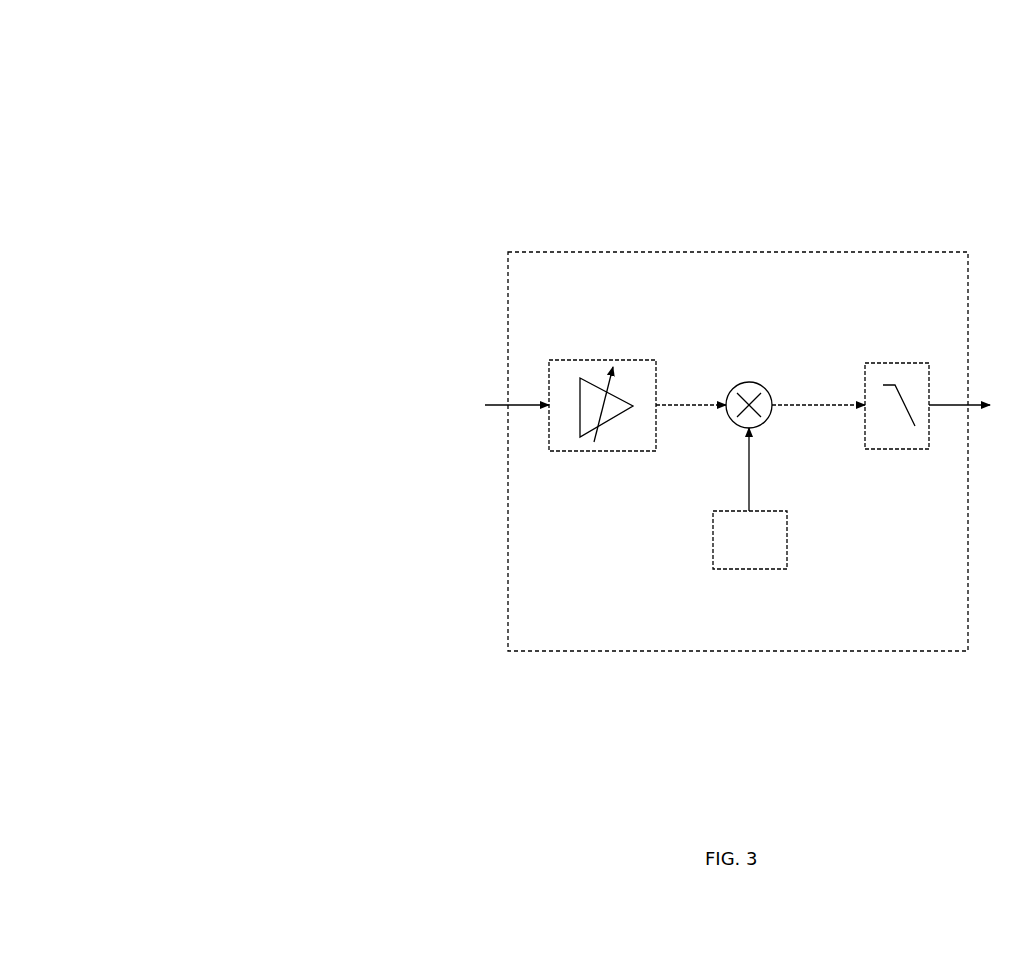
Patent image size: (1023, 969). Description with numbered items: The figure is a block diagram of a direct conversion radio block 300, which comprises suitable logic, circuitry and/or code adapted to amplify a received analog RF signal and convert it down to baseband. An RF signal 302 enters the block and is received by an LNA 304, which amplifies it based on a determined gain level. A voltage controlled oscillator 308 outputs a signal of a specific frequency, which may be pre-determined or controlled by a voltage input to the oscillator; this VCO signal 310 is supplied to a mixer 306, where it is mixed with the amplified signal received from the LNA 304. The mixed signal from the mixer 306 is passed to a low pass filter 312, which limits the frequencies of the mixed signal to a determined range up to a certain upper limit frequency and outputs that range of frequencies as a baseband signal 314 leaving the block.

The direct conversion radio block 300 is at (234, 116).
The RF signal 302 is at (500, 402).
The LNA 304 is at (633, 360).
The mixer 306 is at (752, 382).
The voltage controlled oscillator 308 is at (762, 570).
The VCO signal 310 is at (749, 478).
The low pass filter 312 is at (893, 363).
The baseband signal 314 is at (965, 402).